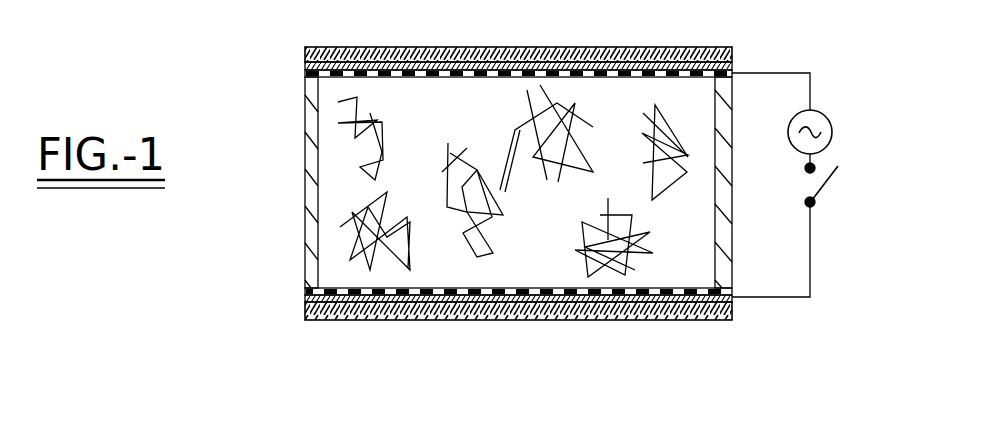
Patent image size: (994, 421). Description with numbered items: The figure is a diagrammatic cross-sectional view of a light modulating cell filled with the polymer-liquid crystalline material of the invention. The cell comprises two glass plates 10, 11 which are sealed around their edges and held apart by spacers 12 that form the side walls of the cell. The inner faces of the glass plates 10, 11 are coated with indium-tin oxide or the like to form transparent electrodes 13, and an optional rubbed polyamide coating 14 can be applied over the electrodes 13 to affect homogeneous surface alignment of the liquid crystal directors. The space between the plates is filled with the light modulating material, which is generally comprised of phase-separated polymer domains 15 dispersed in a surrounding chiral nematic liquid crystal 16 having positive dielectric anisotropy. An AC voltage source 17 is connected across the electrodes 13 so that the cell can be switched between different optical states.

The glass plate 10 is at (513, 47).
The glass plate 11 is at (511, 316).
The spacers 12 is at (303, 250).
The transparent electrodes 13 is at (367, 64).
The rubbed polyamide coating 14 is at (306, 88).
The phase-separated polymer domains 15 is at (380, 128).
The chiral nematic liquid crystal 16 is at (692, 220).
The AC voltage source 17 is at (832, 135).